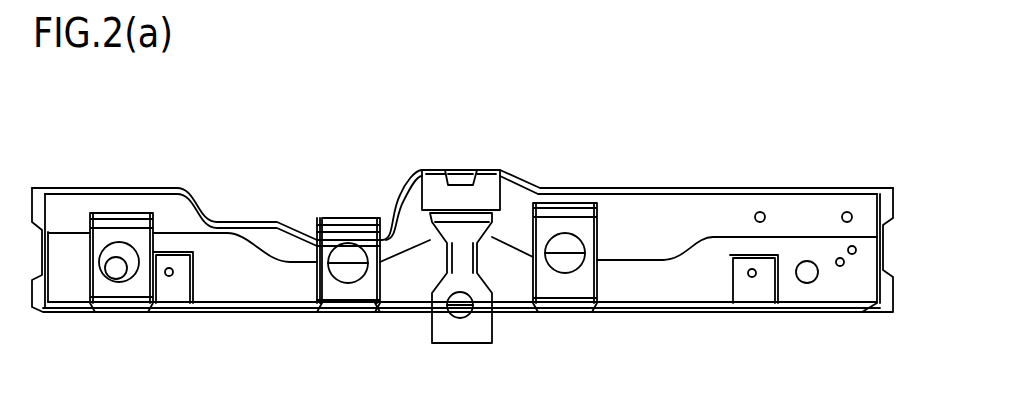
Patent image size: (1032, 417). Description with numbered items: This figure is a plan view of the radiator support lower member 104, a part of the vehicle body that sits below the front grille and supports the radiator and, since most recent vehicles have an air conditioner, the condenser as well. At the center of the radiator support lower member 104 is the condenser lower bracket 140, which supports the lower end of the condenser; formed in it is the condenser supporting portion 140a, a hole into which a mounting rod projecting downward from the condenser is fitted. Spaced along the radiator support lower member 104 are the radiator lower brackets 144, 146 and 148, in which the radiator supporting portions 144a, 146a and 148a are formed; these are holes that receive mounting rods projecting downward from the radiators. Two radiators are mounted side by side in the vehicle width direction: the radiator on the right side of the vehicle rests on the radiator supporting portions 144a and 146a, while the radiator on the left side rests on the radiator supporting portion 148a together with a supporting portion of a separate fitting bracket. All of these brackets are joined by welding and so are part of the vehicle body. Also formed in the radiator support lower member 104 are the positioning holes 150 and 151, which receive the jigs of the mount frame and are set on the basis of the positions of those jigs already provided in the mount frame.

The radiator support lower member 104 is at (419, 167).
The condenser lower bracket 140 is at (445, 334).
The condenser supporting portion 140a is at (468, 313).
The radiator lower bracket 144 is at (158, 233).
The radiator supporting portion 144a is at (124, 242).
The radiator lower bracket 146 is at (317, 301).
The radiator supporting portion 146a is at (350, 284).
The radiator lower bracket 148 is at (543, 208).
The radiator supporting portion 148a is at (568, 234).
The positioning hole 150 is at (803, 261).
The positioning hole 151 is at (114, 257).